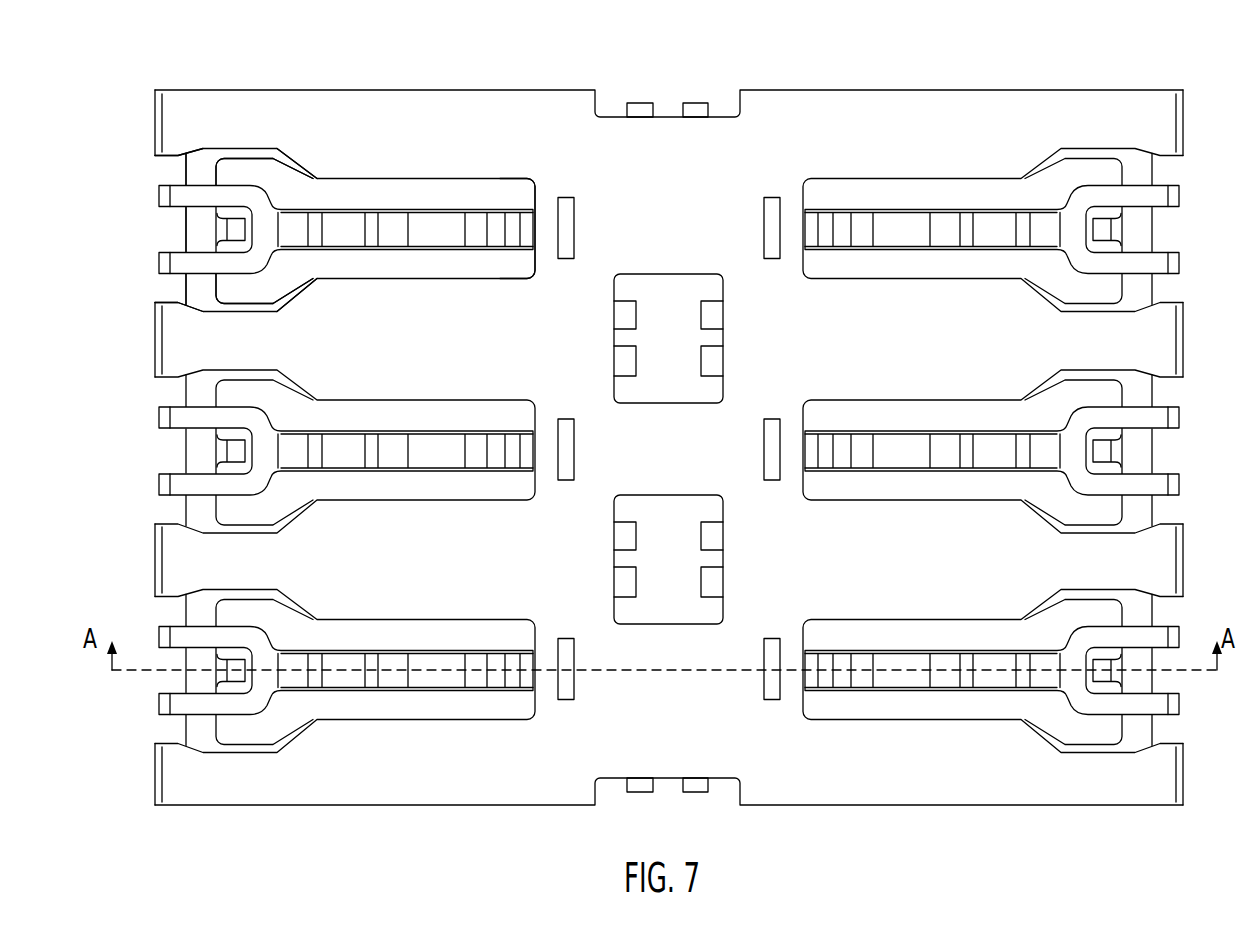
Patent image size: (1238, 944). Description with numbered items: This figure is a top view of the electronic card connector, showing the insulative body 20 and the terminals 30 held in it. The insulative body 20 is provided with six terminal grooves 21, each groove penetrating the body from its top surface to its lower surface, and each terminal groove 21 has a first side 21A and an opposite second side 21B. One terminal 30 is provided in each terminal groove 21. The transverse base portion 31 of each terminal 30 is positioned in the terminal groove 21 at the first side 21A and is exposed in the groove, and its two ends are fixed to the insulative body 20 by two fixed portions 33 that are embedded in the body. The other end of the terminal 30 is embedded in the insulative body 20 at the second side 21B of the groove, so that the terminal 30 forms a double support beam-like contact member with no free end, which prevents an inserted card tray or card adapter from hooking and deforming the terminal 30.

The insulative body 20 is at (572, 100).
The terminal groove 21 is at (427, 187).
The first side 21A is at (165, 171).
The second side 21B is at (531, 196).
The terminal 30 is at (152, 225).
The transverse base portion 31 is at (203, 162).
The fixed portion 33 is at (269, 150).